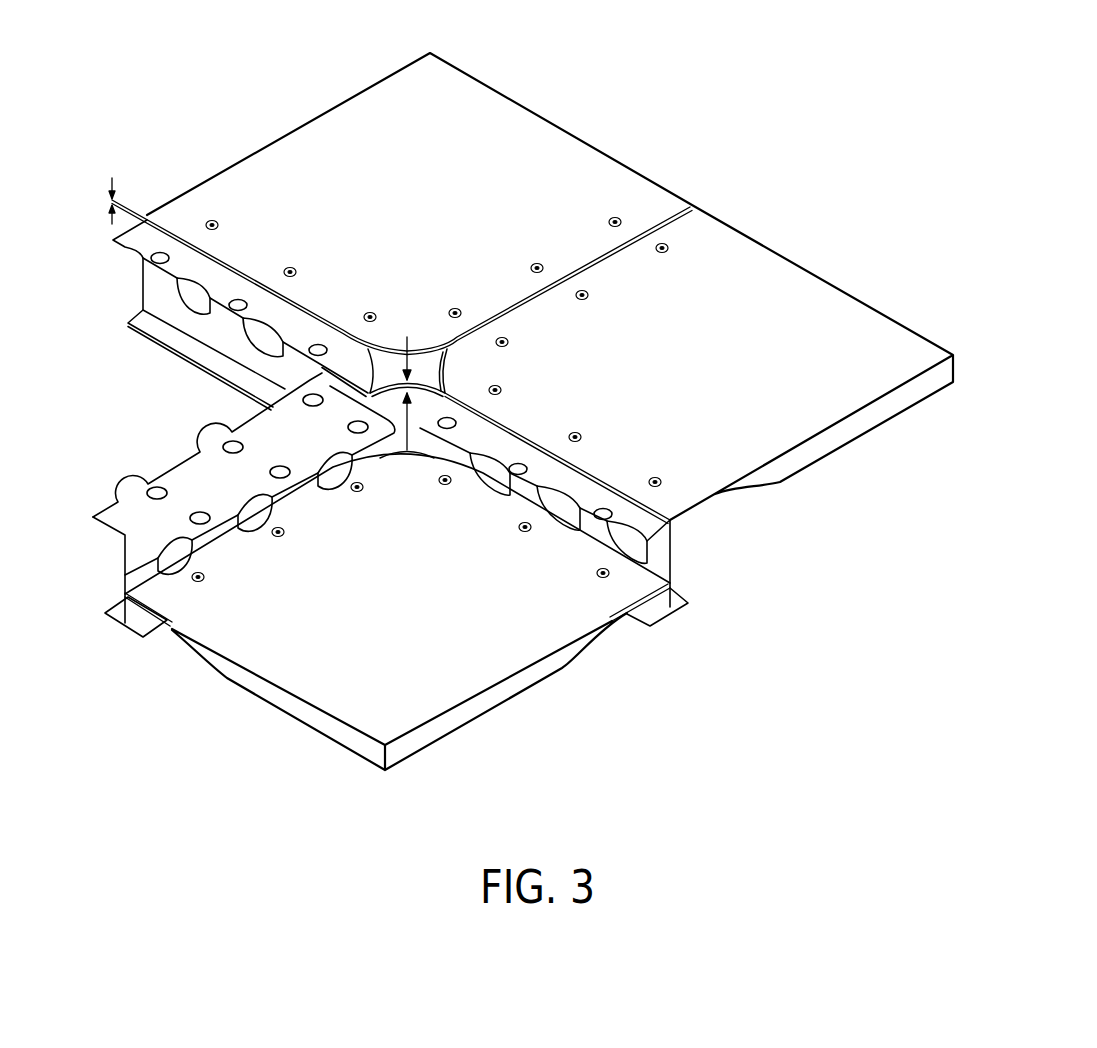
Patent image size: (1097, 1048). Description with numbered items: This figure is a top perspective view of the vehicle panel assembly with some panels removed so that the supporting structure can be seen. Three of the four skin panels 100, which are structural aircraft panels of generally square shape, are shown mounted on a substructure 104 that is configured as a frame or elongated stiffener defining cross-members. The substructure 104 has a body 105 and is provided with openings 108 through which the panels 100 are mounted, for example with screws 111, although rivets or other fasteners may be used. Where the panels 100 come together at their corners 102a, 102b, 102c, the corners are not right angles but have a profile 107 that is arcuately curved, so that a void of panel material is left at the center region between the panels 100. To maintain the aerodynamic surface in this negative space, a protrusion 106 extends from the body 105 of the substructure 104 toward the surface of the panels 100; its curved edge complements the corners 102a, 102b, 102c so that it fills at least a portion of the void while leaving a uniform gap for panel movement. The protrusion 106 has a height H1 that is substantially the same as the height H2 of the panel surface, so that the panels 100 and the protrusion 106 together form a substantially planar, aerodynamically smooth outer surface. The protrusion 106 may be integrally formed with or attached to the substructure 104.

The panel 100 is at (498, 125).
The screw 111 is at (662, 243).
The substructure 104 is at (118, 244).
The body 105 is at (513, 458).
The protrusion 106 is at (430, 360).
The profile 107 is at (280, 380).
The opening 108 is at (148, 487).
The corner 102a is at (388, 343).
The corner 102b is at (447, 367).
The corner 102c is at (403, 452).
The height of the protrusion H1 is at (408, 380).
The height of the surface of the panels H2 is at (115, 186).